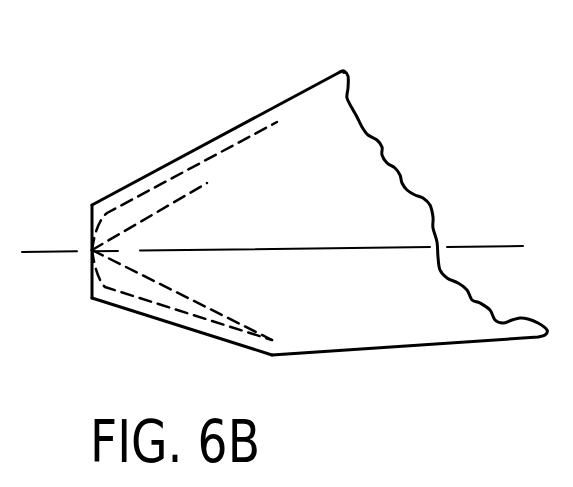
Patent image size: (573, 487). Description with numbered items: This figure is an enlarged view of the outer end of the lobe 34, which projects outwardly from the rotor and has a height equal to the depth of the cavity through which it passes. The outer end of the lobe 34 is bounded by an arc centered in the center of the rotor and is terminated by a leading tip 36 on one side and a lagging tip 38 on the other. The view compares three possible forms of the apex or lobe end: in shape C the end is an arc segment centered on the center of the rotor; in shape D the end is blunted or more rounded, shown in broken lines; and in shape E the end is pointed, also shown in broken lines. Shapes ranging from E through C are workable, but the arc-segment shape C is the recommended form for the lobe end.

The lobe 34 is at (155, 318).
The leading tip 36 is at (91, 205).
The lagging tip 38 is at (92, 300).
The arc-segment lobe end shape C is at (354, 53).
The blunted lobe end shape D is at (199, 179).
The pointed lobe end shape E is at (162, 208).